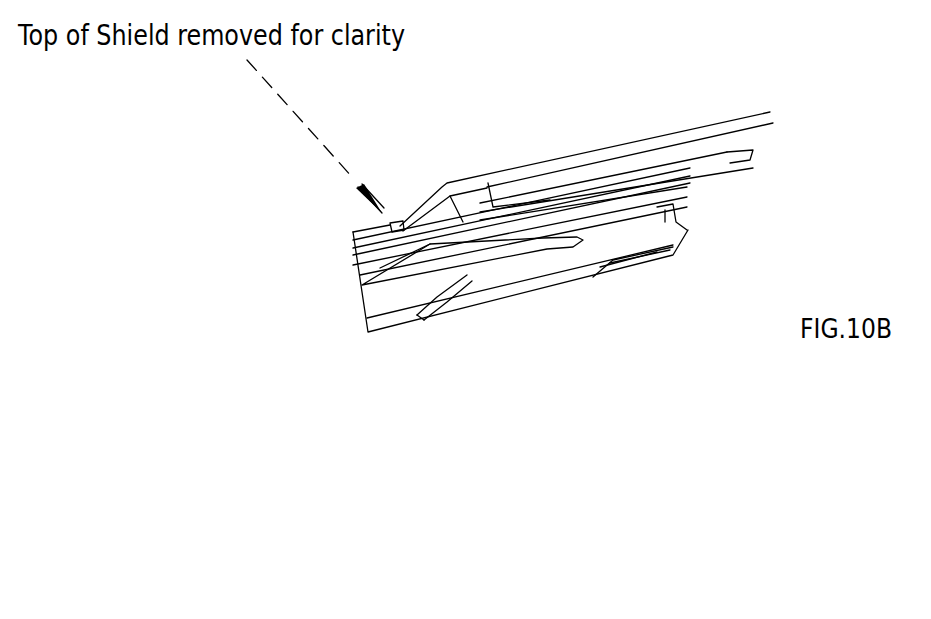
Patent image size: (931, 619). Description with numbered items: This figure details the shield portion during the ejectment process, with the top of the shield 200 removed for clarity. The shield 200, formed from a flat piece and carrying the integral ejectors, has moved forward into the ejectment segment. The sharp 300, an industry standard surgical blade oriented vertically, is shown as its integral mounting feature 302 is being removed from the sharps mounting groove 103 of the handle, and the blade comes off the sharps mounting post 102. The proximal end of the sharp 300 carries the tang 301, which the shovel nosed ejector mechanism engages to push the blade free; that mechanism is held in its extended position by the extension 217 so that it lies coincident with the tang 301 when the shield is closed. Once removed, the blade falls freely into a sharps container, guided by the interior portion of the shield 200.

The sharps mounting post 102 is at (500, 170).
The sharps mounting groove 103 is at (756, 128).
The shield 200 is at (545, 295).
The extension 217 is at (664, 182).
The sharp 300 is at (388, 287).
The tang 301 is at (597, 205).
The integral mounting feature 302 is at (480, 287).